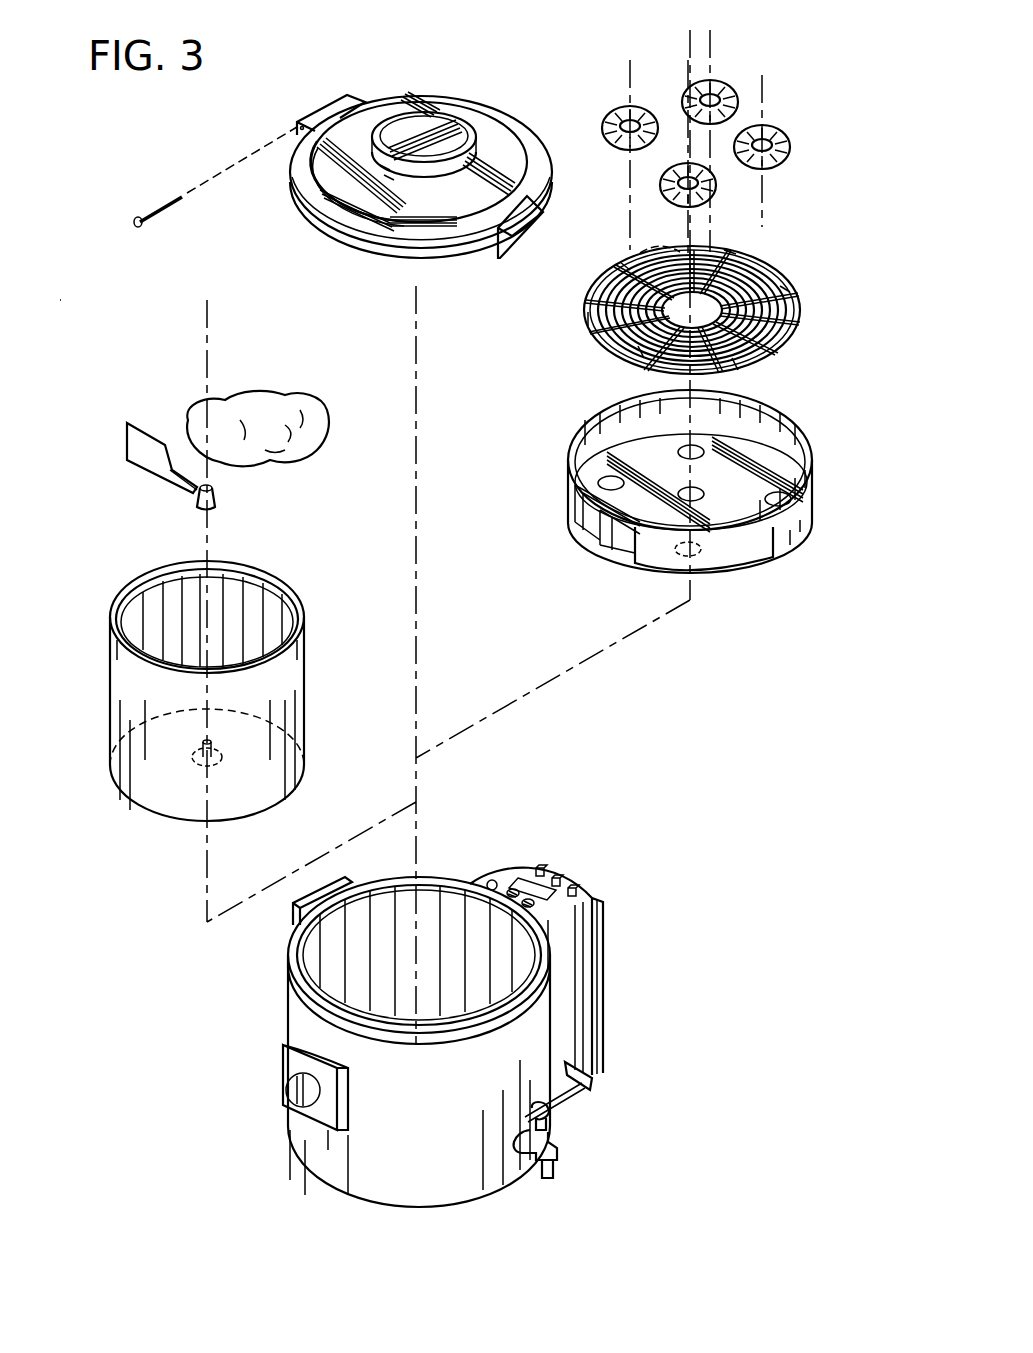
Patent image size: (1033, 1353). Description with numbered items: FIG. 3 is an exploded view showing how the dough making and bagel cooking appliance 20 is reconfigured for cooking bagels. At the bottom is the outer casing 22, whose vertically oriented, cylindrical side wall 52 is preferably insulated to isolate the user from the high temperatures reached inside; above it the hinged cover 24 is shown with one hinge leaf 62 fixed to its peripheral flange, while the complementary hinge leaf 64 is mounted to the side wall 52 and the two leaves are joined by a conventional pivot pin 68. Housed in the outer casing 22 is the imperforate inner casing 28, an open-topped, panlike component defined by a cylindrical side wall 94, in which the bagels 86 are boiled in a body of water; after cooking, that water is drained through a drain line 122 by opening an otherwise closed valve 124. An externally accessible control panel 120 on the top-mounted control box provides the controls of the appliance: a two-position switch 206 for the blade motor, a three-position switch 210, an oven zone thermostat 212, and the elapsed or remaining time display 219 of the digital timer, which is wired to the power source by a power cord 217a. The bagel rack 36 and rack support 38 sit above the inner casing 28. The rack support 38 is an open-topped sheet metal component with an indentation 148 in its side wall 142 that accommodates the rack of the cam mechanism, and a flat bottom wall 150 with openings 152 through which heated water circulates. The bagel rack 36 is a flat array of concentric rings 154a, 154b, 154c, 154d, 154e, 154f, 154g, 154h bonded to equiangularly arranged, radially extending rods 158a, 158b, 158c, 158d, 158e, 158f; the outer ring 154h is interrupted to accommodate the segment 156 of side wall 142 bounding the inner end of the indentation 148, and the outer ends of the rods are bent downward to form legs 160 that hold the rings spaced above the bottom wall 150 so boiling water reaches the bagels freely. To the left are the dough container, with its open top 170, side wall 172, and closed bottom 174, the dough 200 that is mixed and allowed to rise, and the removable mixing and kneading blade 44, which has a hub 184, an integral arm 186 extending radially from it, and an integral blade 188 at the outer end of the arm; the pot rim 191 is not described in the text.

The dough making and bagel cooking appliance 20 is at (120, 354).
The outer casing 22 is at (258, 988).
The hinged cover 24 is at (462, 77).
The inner casing 28 is at (476, 1008).
The bagel rack 36 is at (515, 372).
The rack support 38 is at (555, 462).
The blade 44 is at (140, 487).
The side wall 52 is at (420, 1112).
The hinge leaf 62 is at (320, 112).
The hinge leaf 64 is at (295, 908).
The pivot pin 68 is at (155, 205).
The bagels 86 is at (680, 165).
The cylindrical side wall 94 is at (400, 882).
The control panel 120 is at (505, 860).
The drain line 122 is at (552, 1158).
The valve 124 is at (550, 1112).
The side wall 142 is at (722, 566).
The indentation 148 is at (628, 548).
The bottom wall 150 is at (620, 440).
The openings 152 is at (790, 500).
The ring 154a is at (600, 335).
The ring 154b is at (592, 300).
The ring 154c is at (610, 290).
The ring 154d is at (768, 250).
The ring 154e is at (795, 298).
The ring 154f is at (795, 322).
The ring 154g is at (780, 335).
The outer ring 154h is at (772, 352).
The segment 156 is at (590, 520).
The radially extending rod 158a is at (588, 320).
The radially extending rod 158b is at (625, 268).
The radially extending rod 158c is at (730, 250).
The radially extending rod 158d is at (785, 290).
The radially extending rod 158e is at (735, 365).
The radially extending rod 158f is at (640, 352).
The legs 160 is at (645, 368).
The open top 170 is at (150, 578).
The side wall 172 is at (113, 672).
The closed bottom 174 is at (128, 770).
The hub 184 is at (215, 500).
The arm 186 is at (175, 468).
The blade 188 is at (125, 430).
The pot rim 191 is at (120, 600).
The dough 200 is at (305, 395).
The two-position switch 206 is at (510, 897).
The three-position switch 210 is at (525, 908).
The oven zone thermostat 212 is at (492, 878).
The power cord 217a is at (603, 1080).
The time display 219 is at (530, 870).